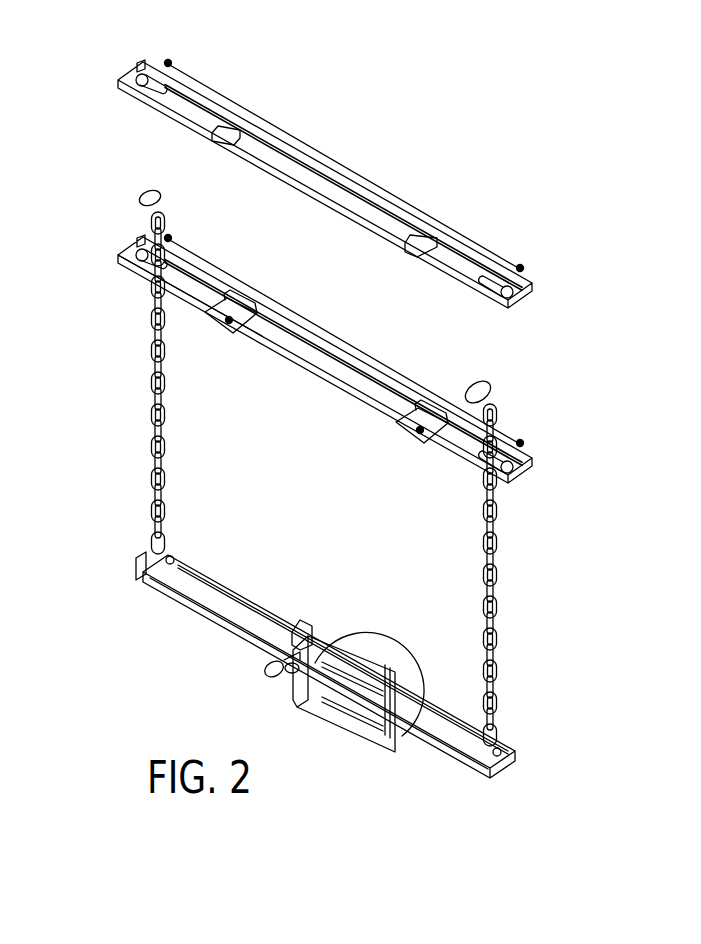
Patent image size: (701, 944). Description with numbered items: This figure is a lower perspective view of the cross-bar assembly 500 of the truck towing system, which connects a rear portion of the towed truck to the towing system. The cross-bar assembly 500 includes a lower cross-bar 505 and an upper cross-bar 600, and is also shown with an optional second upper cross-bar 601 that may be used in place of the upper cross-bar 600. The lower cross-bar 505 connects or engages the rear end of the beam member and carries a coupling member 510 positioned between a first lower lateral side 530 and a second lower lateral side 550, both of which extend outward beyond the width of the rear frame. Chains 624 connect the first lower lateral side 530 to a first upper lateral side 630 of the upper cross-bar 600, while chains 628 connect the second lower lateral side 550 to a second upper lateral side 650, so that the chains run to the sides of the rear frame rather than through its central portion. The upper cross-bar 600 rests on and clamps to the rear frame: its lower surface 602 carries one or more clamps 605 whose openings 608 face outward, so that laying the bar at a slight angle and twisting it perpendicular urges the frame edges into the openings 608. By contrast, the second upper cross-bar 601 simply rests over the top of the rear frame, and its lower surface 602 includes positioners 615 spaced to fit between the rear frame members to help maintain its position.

The cross-bar assembly 500 is at (582, 370).
The lower cross-bar 505 is at (470, 745).
The coupling member 510 is at (347, 735).
The first lower lateral side 530 is at (210, 595).
The second lower lateral side 550 is at (433, 733).
The upper cross-bar 600 is at (340, 343).
The second upper cross-bar 601 is at (359, 178).
The lower surface 602 is at (291, 162).
The clamps 605 is at (231, 330).
The openings 608 is at (246, 300).
The positioners 615 is at (233, 122).
The chains 624 is at (150, 441).
The chains 628 is at (483, 603).
The first upper lateral side 630 is at (195, 284).
The second upper lateral side 650 is at (452, 410).